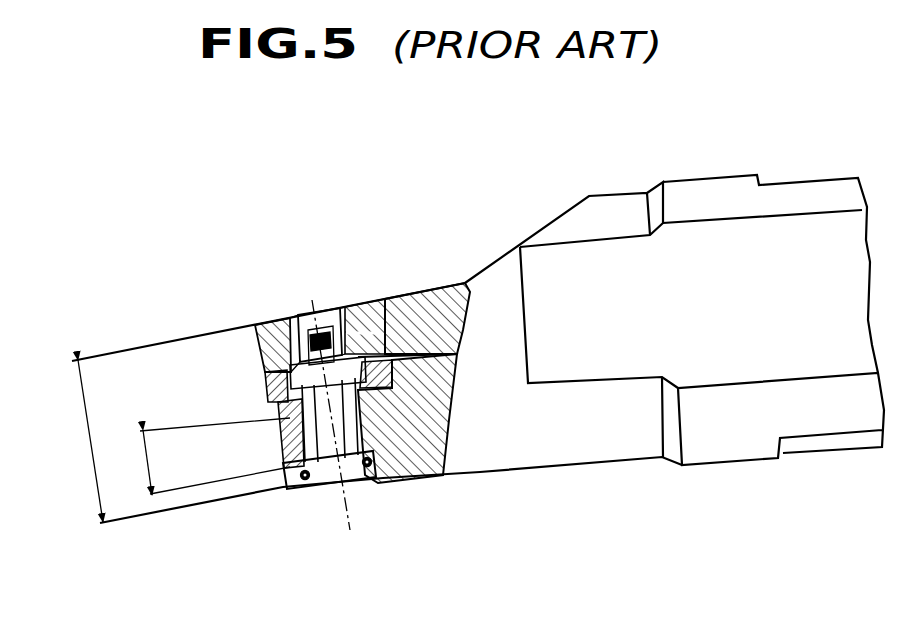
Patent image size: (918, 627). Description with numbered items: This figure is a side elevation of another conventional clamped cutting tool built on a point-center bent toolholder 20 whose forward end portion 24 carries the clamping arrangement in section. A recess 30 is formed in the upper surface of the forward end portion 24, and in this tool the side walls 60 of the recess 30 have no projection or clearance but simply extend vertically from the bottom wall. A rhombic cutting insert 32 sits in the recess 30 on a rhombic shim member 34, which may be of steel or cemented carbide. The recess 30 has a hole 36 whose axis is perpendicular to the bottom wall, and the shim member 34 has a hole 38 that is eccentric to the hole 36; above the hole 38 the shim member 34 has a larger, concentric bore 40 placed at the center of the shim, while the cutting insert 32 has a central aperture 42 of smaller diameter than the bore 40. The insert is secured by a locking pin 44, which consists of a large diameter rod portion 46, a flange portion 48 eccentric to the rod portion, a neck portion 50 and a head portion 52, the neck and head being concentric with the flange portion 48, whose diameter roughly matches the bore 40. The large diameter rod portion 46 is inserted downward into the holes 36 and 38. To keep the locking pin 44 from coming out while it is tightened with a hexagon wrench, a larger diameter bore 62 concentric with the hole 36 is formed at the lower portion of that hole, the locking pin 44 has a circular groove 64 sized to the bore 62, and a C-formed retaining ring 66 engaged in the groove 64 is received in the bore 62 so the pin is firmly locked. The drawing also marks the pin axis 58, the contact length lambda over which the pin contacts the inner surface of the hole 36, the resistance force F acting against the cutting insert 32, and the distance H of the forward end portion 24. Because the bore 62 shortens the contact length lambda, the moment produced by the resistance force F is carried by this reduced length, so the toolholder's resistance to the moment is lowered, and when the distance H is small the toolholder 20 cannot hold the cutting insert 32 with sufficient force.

The point-center bent toolholder 20 is at (630, 190).
The forward end portion 24 is at (448, 300).
The recess 30 is at (263, 407).
The cutting insert 32 is at (262, 336).
The shim member 34 is at (263, 380).
The hole 36 is at (290, 440).
The hole 38 is at (300, 420).
The bore 40 is at (268, 335).
The aperture 42 is at (300, 330).
The locking pin 44 is at (362, 506).
The large diameter rod portion 46 is at (352, 430).
The flange portion 48 is at (440, 354).
The neck portion 50 is at (303, 340).
The head portion 52 is at (320, 330).
The screw axis 58 is at (328, 500).
The side walls 60 is at (370, 330).
The larger diameter bore 62 is at (300, 484).
The circular groove 64 is at (320, 485).
The C-formed retaining ring 66 is at (368, 470).
The resistance force F is at (357, 330).
The distance of the forward end portion H is at (77, 441).
The length lambda is at (207, 456).